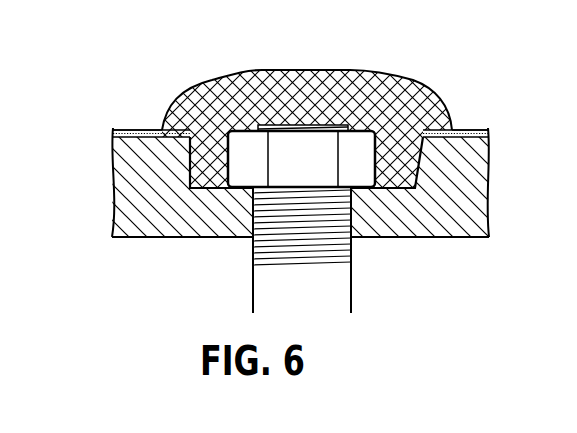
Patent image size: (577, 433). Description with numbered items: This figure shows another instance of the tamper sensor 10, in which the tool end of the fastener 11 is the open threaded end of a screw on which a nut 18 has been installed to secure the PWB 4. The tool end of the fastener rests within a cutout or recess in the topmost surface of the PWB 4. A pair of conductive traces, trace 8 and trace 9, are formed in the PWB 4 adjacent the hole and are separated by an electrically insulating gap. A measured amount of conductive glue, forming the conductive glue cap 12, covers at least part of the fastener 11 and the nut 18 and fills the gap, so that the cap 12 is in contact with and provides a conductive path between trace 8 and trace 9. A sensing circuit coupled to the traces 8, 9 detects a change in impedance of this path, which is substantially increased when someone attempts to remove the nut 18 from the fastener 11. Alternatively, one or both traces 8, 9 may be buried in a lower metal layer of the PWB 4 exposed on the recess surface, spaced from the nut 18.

The PWB 4 is at (472, 200).
The conductive trace 8 is at (128, 124).
The conductive trace 9 is at (462, 128).
The tamper sensor 10 is at (381, 50).
The fastener 11 is at (351, 277).
The conductive glue cap 12 is at (235, 72).
The nut 18 is at (217, 189).